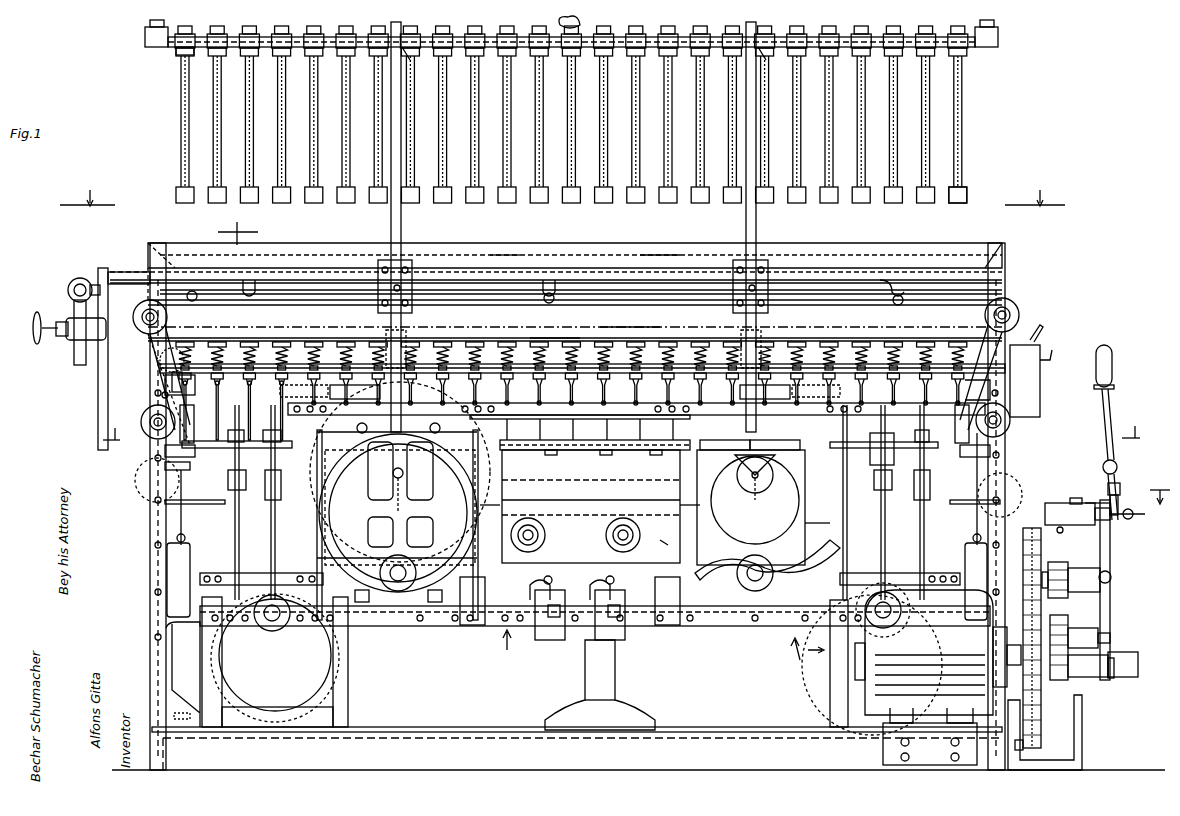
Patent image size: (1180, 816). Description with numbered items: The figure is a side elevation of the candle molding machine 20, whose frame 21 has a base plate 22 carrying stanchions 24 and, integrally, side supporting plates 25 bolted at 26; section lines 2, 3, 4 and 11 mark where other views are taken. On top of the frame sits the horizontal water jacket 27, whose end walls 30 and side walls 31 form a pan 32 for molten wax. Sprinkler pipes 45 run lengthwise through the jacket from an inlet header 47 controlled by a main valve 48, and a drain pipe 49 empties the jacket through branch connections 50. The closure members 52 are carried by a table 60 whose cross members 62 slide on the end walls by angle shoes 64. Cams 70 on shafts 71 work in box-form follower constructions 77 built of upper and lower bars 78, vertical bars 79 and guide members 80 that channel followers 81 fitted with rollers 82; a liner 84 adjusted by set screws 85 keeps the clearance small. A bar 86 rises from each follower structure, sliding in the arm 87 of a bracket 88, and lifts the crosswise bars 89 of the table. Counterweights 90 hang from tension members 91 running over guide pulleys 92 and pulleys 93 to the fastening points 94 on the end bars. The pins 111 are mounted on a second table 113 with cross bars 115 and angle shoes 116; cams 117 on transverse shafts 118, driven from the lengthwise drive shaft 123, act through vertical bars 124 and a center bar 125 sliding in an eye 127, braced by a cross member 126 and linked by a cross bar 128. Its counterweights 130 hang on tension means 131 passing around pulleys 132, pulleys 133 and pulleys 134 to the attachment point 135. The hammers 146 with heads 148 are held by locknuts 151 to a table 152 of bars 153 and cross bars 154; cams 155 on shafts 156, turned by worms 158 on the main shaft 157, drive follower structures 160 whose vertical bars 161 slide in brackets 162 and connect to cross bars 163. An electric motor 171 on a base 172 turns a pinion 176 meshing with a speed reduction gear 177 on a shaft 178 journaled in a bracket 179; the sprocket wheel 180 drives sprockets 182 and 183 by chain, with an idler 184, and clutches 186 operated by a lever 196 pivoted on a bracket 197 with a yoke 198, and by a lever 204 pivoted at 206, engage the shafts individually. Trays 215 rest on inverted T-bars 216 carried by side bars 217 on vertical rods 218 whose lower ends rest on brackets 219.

The section line 2 is at (238, 231).
The section line 3 is at (562, 196).
The section line 4 is at (619, 359).
The section line 11 is at (1100, 488).
The machine 20 is at (977, 99).
The frame 21 is at (510, 770).
The base plate 22 is at (690, 724).
The stanchions 24 is at (612, 690).
The supporting plates 25 is at (591, 506).
The bolts 26 is at (160, 545).
The water jacket 27 is at (320, 290).
The end walls 30 is at (148, 250).
The side walls 31 is at (505, 255).
The pan 32 is at (668, 250).
The sprinkler pipes 45 is at (118, 280).
The inlet header 47 is at (68, 290).
The main valve 48 is at (57, 332).
The drain pipe 49 is at (560, 290).
The branch connections 50 is at (258, 292).
The closure members 52 is at (520, 340).
The table 60 is at (330, 364).
The cross members 62 is at (185, 385).
The angle shoes 64 is at (165, 380).
The cams 70 is at (490, 505).
The shafts 71 is at (404, 480).
The follower construction 77 is at (680, 543).
The upper and lower bars 78 is at (585, 445).
The vertical bars 79 is at (690, 508).
The guide members 80 is at (445, 505).
The followers 81 is at (760, 510).
The rollers 82 is at (760, 480).
The liner 84 is at (708, 445).
The set screws 85 is at (755, 445).
The bar 86 is at (395, 410).
The arm 87 is at (348, 399).
The bracket 88 is at (570, 390).
The crosswise bars 89 is at (405, 345).
The counterweights 90 is at (167, 600).
The tension members 91 is at (183, 520).
The guide pulleys 92 is at (145, 412).
The pulleys 93 is at (134, 318).
The fastening point 94 is at (190, 370).
The pins 111 is at (572, 400).
The table 113 is at (560, 445).
The cross bars 115 is at (165, 450).
The angle shoes 116 is at (210, 500).
The cams 117 is at (840, 665).
The shafts 118 is at (272, 620).
The drive shaft 123 is at (1130, 643).
The vertical bars 124 is at (237, 565).
The center bar 125 is at (271, 520).
The cross member 126 is at (236, 440).
The eye 127 is at (240, 485).
The cross bar 128 is at (270, 440).
The counterweights 130 is at (545, 640).
The tension means 131 is at (165, 466).
The pulleys 132 is at (548, 518).
The pulleys 133 is at (145, 492).
The pulleys 134 is at (160, 360).
The attachment point 135 is at (196, 440).
The hammers 146 is at (448, 132).
The head 148 is at (452, 200).
The locknuts 151 is at (455, 37).
The table 152 is at (148, 37).
The bars 153 is at (178, 55).
The cross bars 154 is at (998, 40).
The cams 155 is at (475, 625).
The shafts 156 is at (396, 585).
The main shaft 157 is at (1128, 520).
The worms 158 is at (582, 20).
The follower structures 160 is at (618, 647).
The vertical bars 161 is at (401, 222).
The brackets 162 is at (412, 262).
The cross bars 163 is at (406, 54).
The electric motor 171 is at (938, 652).
The base 172 is at (883, 752).
The pinion 176 is at (1045, 638).
The speed reduction gear 177 is at (1042, 742).
The shaft 178 is at (1110, 633).
The bracket 179 is at (1078, 735).
The sprocket wheel 180 is at (1062, 615).
The sprocket 182 is at (1078, 677).
The sprocket 183 is at (1060, 503).
The idler 184 is at (1066, 563).
The clutches 186 is at (1112, 678).
The lever 196 is at (1112, 370).
The bracket 197 is at (1090, 494).
The yoke 198 is at (1126, 497).
The lever 204 is at (1110, 595).
The pivot 206 is at (1112, 575).
The trays 215 is at (615, 327).
The inverted T-bars 216 is at (168, 268).
The bars 217 is at (548, 338).
The vertical rods 218 is at (160, 350).
The brackets 219 is at (150, 392).